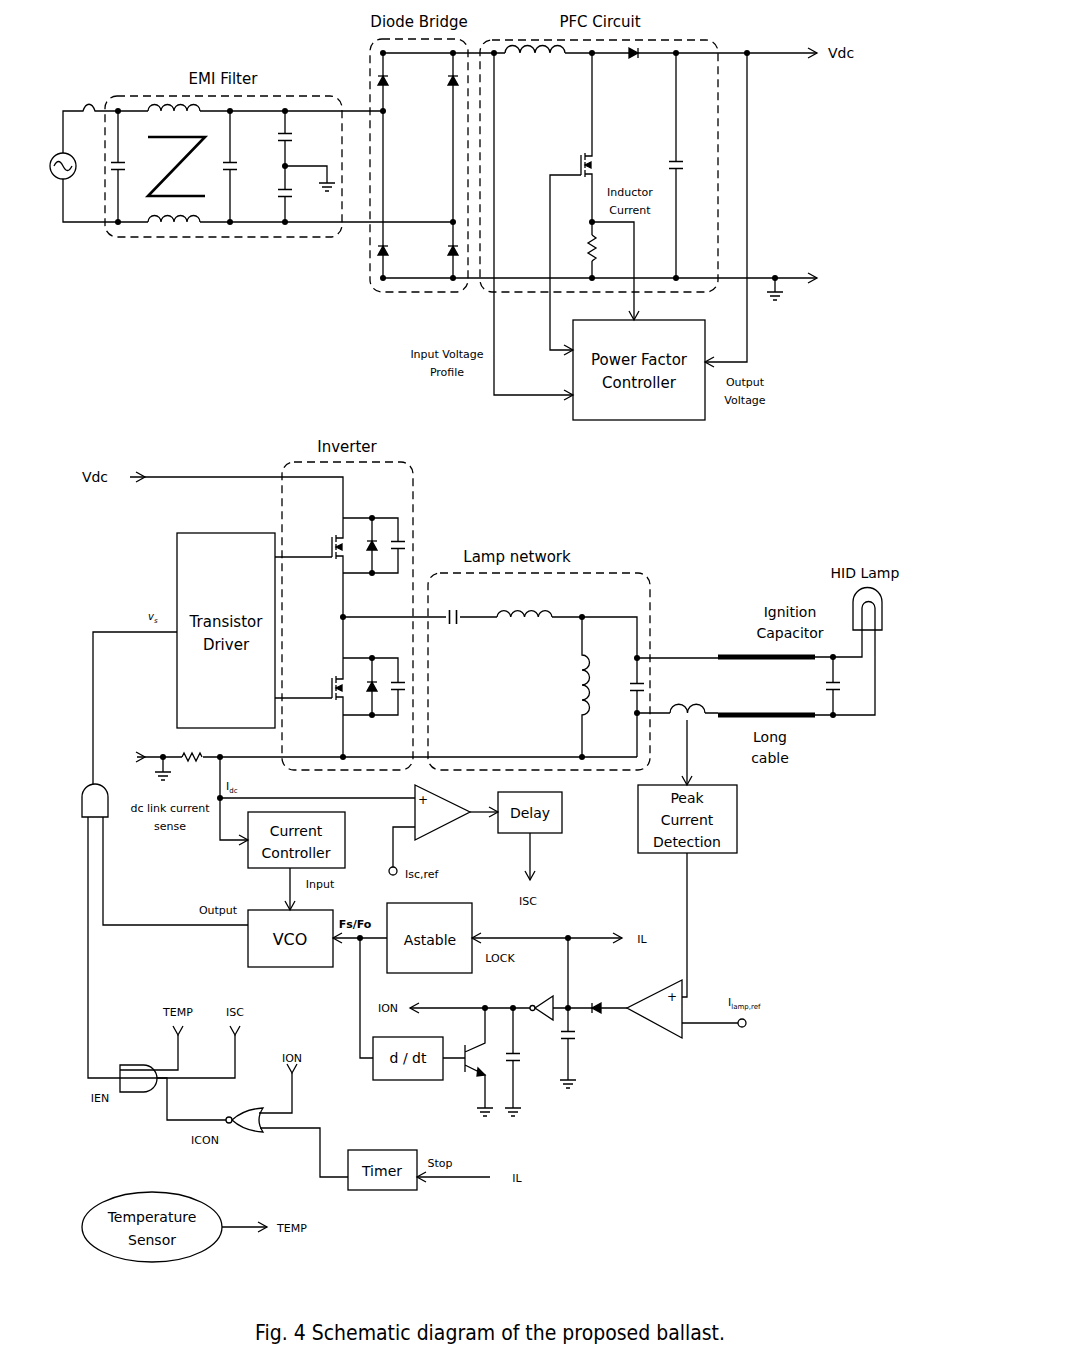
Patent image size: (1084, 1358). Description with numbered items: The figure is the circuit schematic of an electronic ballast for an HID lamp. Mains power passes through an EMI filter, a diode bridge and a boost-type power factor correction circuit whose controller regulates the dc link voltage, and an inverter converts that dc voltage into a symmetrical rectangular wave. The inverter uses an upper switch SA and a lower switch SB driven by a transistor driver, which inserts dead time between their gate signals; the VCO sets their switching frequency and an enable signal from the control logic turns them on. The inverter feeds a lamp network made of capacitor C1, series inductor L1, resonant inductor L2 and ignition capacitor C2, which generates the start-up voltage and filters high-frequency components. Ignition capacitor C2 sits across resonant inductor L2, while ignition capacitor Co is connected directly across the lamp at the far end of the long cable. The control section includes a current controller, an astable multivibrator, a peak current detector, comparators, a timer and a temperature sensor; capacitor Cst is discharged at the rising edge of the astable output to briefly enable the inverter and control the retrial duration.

The upper switch SA is at (309, 547).
The lower switch SB is at (309, 688).
The capacitor C1 is at (453, 607).
The series inductor L1 is at (524, 603).
The resonant inductor L2 is at (571, 687).
The ignition capacitor C2 is at (623, 687).
The ignition capacitor Co is at (820, 687).
The capacitor Cst is at (527, 1062).